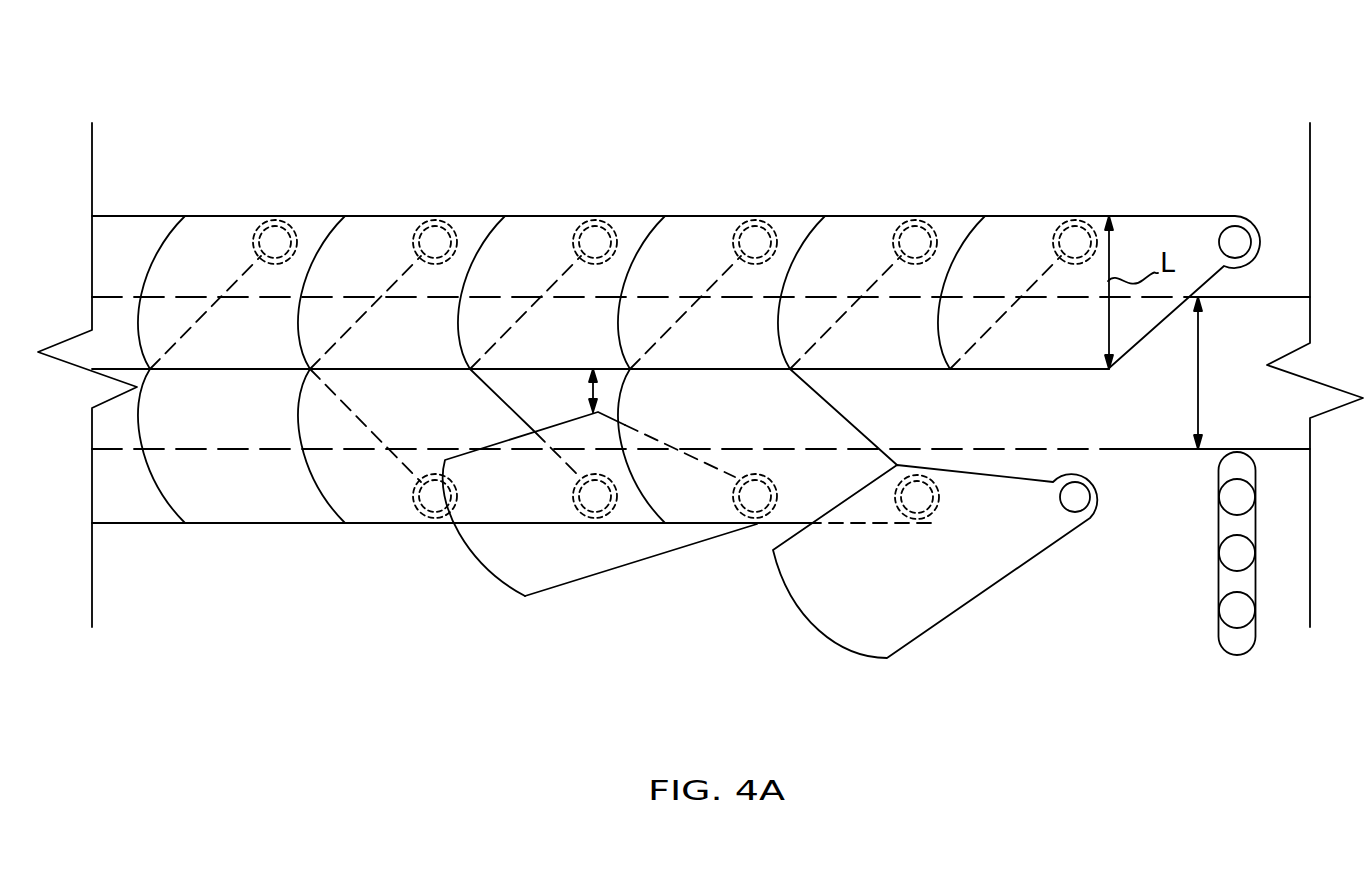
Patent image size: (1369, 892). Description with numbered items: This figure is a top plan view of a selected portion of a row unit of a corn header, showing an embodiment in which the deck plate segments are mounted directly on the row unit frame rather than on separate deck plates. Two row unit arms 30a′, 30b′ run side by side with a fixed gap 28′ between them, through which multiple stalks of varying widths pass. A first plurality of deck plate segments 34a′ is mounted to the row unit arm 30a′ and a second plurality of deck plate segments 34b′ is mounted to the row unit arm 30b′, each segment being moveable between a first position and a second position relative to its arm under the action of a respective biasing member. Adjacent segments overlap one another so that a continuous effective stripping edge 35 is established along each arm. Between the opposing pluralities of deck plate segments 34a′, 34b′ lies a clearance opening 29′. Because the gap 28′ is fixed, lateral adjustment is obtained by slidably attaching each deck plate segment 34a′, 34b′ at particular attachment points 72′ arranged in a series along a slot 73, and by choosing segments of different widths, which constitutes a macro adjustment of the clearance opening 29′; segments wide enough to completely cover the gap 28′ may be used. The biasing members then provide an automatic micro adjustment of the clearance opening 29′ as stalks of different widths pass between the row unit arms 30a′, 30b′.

The first deck plate segments 34a′ is at (208, 228).
The second deck plate segments 34b′ is at (227, 495).
The row unit arm 30a′ is at (1290, 297).
The row unit arm 30b′ is at (1277, 452).
The gap 28′ is at (1204, 377).
The clearance opening 29′ is at (604, 392).
The effective stripping edge 35 is at (972, 382).
The attachment points 72′ is at (1218, 493).
The slot 73 is at (1218, 642).